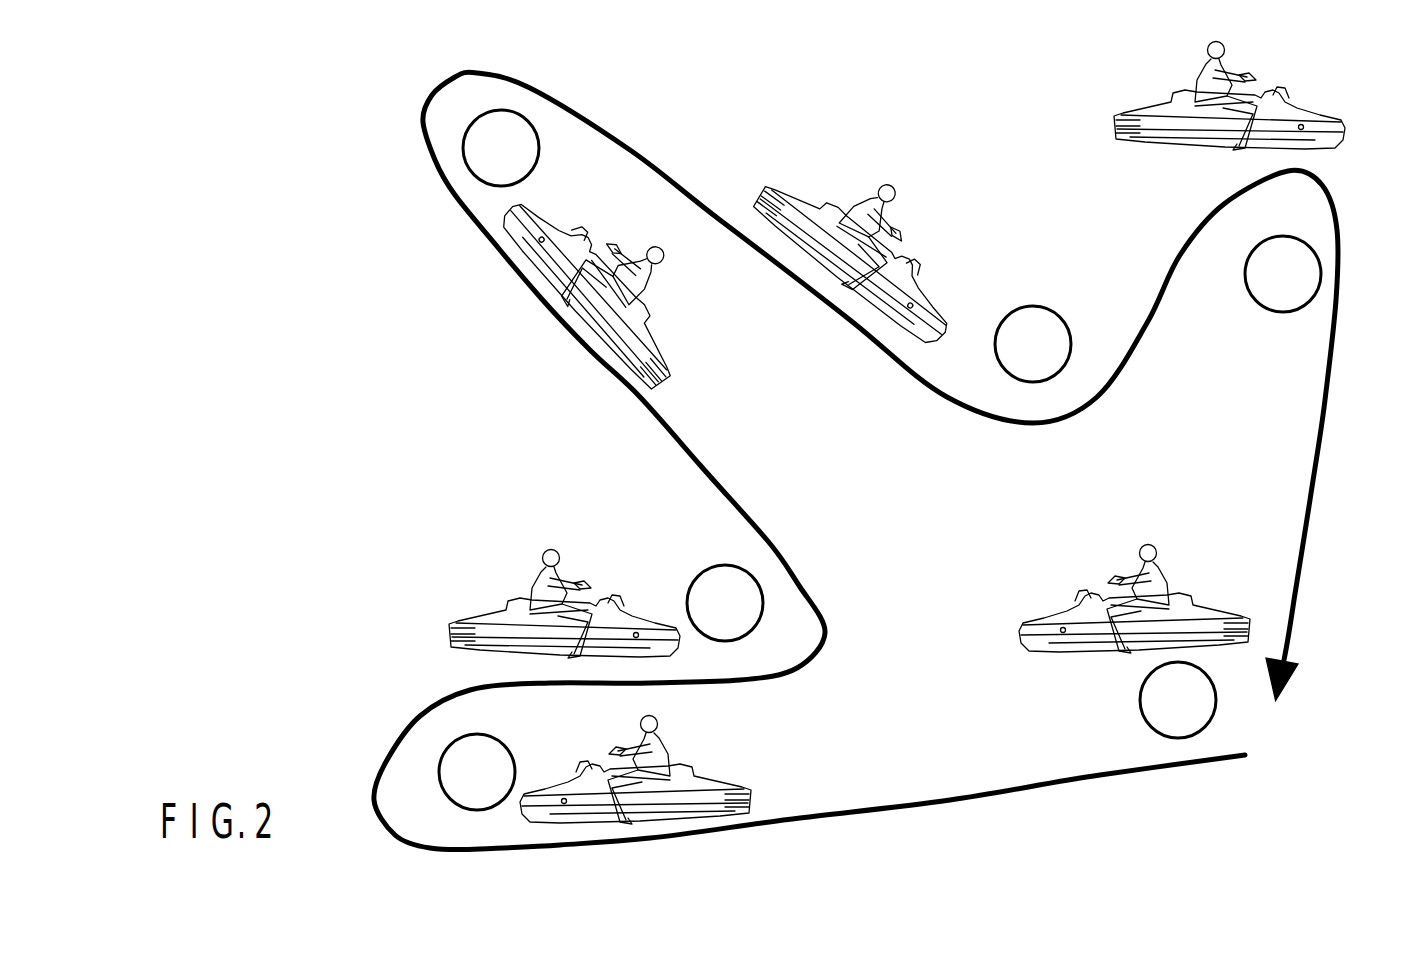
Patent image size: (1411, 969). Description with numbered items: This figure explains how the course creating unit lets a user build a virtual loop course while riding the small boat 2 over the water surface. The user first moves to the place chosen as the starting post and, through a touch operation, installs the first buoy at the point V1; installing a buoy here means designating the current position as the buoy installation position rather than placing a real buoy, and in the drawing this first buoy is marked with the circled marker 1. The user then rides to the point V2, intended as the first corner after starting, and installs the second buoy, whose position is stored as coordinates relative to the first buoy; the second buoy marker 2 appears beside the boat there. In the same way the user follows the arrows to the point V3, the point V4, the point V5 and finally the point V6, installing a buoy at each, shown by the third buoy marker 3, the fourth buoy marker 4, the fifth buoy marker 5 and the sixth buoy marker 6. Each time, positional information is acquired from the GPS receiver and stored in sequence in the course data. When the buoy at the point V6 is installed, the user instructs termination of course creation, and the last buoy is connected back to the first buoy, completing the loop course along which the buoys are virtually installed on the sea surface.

The first waypoint 1 is at (1178, 700).
The small boat 2 is at (477, 772).
The third waypoint 3 is at (725, 603).
The fourth waypoint 4 is at (501, 148).
The fifth waypoint 5 is at (1033, 344).
The sixth waypoint 6 is at (1283, 274).
The point V1 is at (1138, 713).
The point V2 is at (512, 744).
The point V3 is at (706, 568).
The point V4 is at (540, 163).
The point V5 is at (1040, 305).
The point V6 is at (1268, 309).